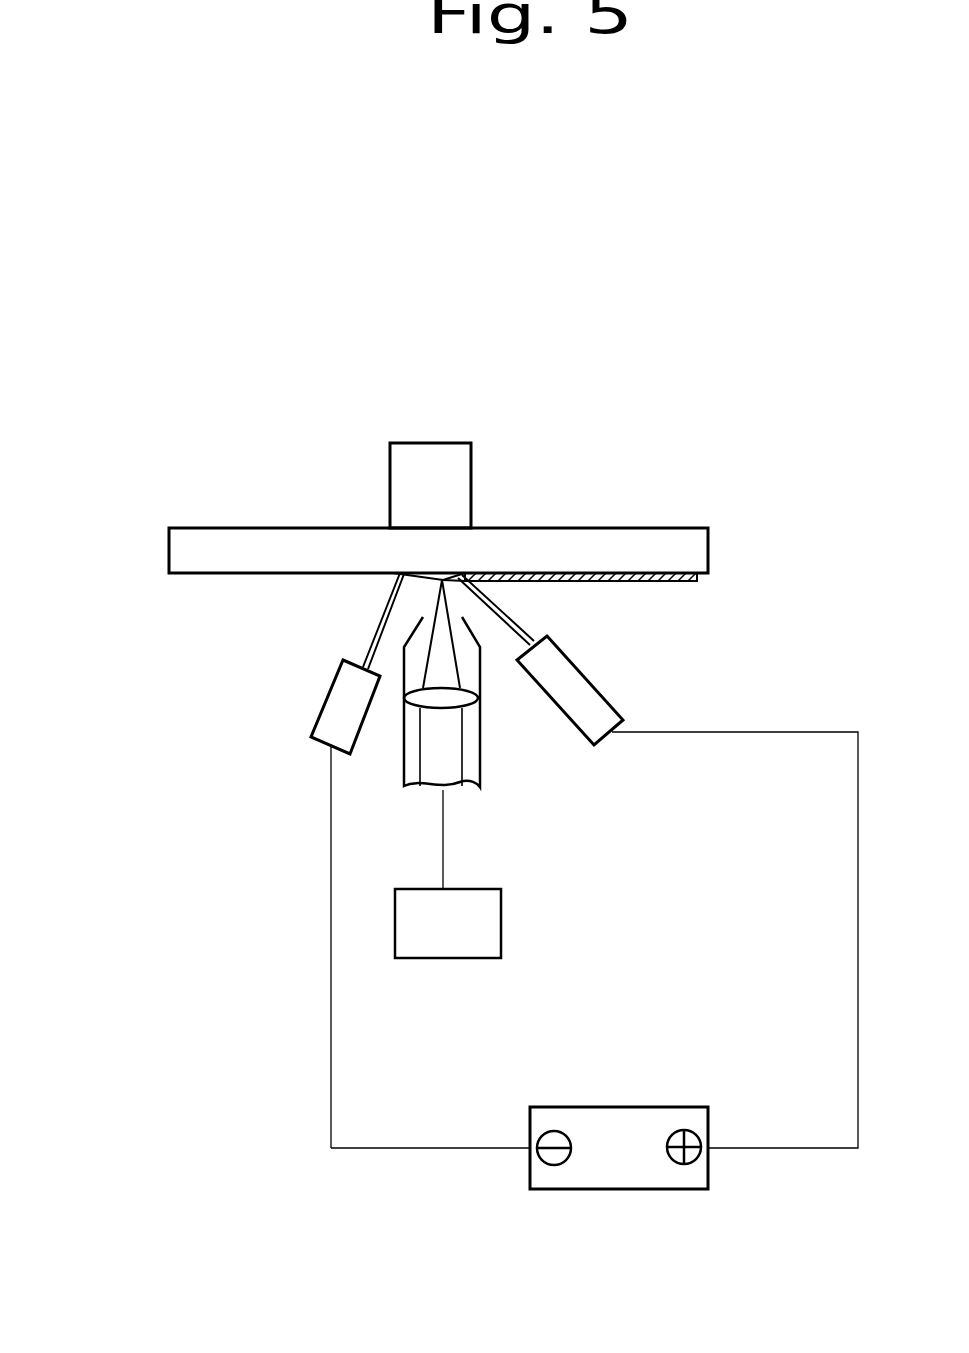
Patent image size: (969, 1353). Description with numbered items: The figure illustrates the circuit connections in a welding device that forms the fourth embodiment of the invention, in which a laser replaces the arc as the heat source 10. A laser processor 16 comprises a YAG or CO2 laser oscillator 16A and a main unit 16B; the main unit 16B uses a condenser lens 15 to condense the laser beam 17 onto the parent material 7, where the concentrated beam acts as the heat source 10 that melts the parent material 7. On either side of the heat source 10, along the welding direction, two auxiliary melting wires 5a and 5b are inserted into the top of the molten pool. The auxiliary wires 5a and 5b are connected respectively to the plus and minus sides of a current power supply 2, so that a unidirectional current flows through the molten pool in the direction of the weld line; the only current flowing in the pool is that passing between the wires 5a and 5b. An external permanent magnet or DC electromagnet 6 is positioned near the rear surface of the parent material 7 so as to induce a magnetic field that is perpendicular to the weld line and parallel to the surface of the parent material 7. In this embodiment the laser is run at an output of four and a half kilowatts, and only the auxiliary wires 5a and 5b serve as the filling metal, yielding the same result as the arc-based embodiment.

The current power supply 2 is at (592, 1178).
The auxiliary wire 5a is at (372, 630).
The auxiliary wire 5b is at (513, 620).
The external permanent magnet or DC electromagnet 6 is at (437, 470).
The parent material 7 is at (180, 548).
The heat source 10 is at (443, 572).
The condenser lens 15 is at (452, 698).
The laser processor 16 is at (402, 867).
The laser oscillator 16A is at (501, 922).
The main unit 16B is at (395, 761).
The laser beam 17 is at (450, 768).